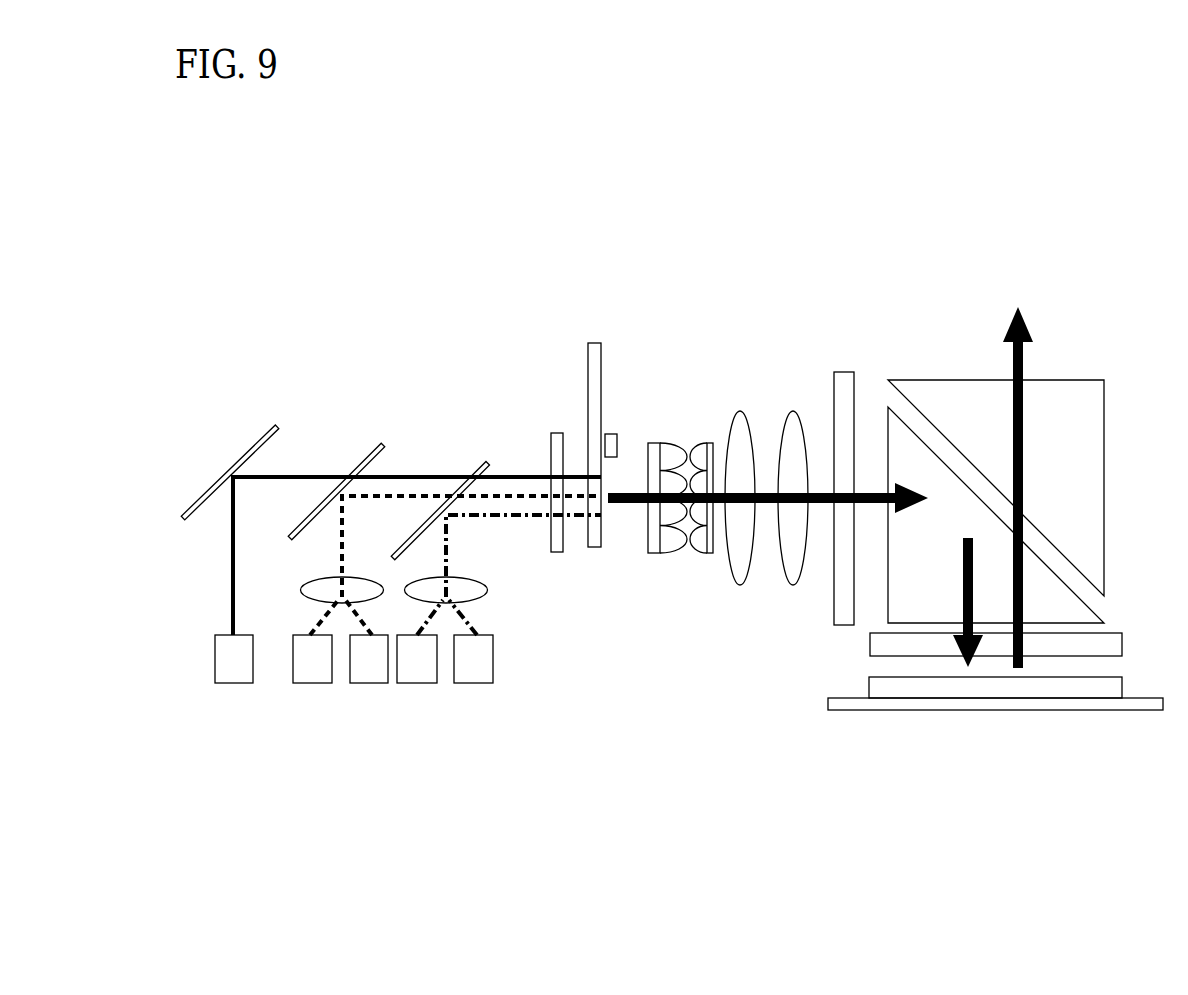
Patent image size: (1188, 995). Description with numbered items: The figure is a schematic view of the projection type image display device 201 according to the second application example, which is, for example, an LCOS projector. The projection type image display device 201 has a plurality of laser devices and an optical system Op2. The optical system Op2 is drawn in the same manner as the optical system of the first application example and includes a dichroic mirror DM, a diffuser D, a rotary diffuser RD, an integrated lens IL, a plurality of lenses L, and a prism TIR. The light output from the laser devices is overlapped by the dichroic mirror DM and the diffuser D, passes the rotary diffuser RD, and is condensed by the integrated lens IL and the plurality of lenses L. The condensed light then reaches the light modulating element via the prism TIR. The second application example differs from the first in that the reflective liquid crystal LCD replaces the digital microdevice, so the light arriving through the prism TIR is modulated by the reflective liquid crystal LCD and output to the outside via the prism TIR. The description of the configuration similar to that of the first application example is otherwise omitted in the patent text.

The projection type image display device 201 is at (999, 219).
The dichroic mirror DM is at (477, 467).
The diffuser D is at (562, 434).
The rotary diffuser RD is at (587, 363).
The integrated lens IL is at (675, 427).
The lenses L is at (793, 412).
The optical system Op2 is at (779, 334).
The prism TIR is at (1062, 397).
The reflective liquid crystal LCD is at (956, 690).